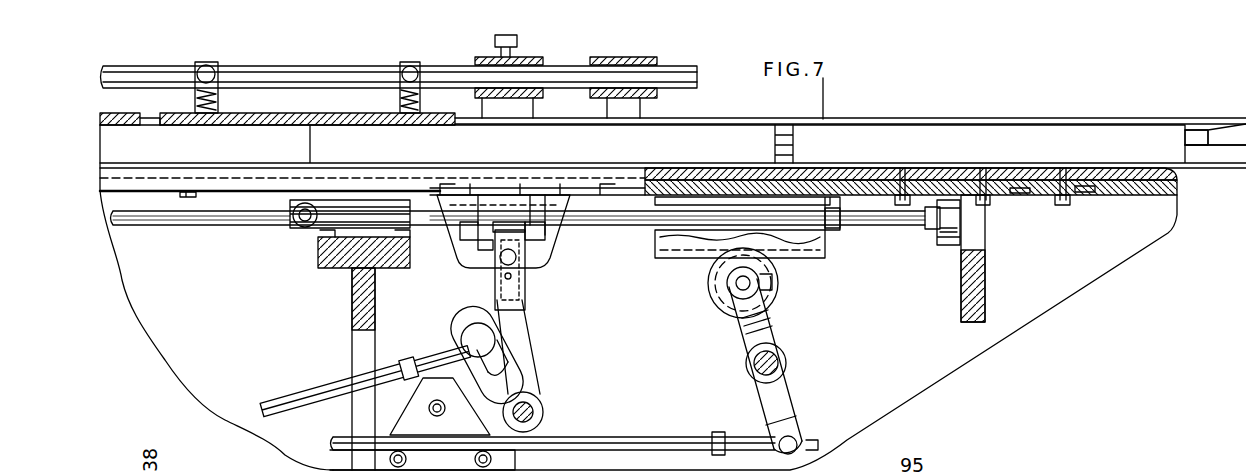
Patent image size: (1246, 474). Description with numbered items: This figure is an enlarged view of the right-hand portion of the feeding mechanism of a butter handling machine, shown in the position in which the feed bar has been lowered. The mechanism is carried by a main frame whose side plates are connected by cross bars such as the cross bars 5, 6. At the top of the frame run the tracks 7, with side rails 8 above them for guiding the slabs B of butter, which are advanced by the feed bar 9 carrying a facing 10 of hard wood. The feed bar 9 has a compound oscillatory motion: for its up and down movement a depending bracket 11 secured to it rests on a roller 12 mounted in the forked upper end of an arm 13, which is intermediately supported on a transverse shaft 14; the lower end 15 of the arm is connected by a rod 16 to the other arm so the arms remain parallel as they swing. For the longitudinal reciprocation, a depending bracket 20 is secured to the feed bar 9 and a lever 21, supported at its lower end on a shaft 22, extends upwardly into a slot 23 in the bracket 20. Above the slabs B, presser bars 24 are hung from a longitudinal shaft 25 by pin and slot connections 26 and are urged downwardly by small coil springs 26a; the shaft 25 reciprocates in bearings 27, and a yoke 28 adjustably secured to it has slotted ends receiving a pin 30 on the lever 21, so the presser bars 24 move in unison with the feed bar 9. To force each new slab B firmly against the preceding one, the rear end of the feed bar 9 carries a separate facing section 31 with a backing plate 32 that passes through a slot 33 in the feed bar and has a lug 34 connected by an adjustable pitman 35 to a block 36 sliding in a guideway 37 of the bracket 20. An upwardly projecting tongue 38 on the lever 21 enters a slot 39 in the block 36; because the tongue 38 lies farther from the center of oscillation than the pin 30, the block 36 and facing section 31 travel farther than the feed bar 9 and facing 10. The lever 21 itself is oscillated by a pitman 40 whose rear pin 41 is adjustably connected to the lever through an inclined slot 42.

The cross bar 5 is at (356, 286).
The cross bar 6 is at (986, 256).
The track 7 is at (1226, 168).
The side rail 8 is at (1199, 128).
The feed bar 9 is at (248, 183).
The facing 10 is at (418, 171).
The depending bracket 11 is at (820, 257).
The roller 12 is at (778, 286).
The arm 13 is at (765, 320).
The transverse shaft 14 is at (786, 360).
The lower end of arm 15 is at (798, 431).
The rod 16 is at (640, 440).
The depending bracket 20 is at (552, 252).
The lever 21 is at (519, 329).
The shaft 22 is at (533, 410).
The slot 23 is at (527, 270).
The presser bar 24 is at (348, 119).
The longitudinal shaft 25 is at (323, 74).
The pin and slot connection 26 is at (212, 68).
The coil spring 26a is at (222, 98).
The bearing 27 is at (610, 58).
The yoke 28 is at (478, 58).
The pin 30 is at (504, 264).
The facing section 31 is at (576, 173).
The backing plate 32 is at (1022, 193).
The slot 33 is at (1085, 192).
The lug 34 is at (945, 240).
The adjustable pitman 35 is at (890, 227).
The block 36 is at (478, 236).
The guideway 37 is at (546, 233).
The tongue 38 is at (490, 250).
The slot 39 is at (492, 229).
The pitman 40 is at (306, 396).
The pin 41 is at (488, 344).
The inclined slot 42 is at (500, 368).
The slab B is at (708, 121).